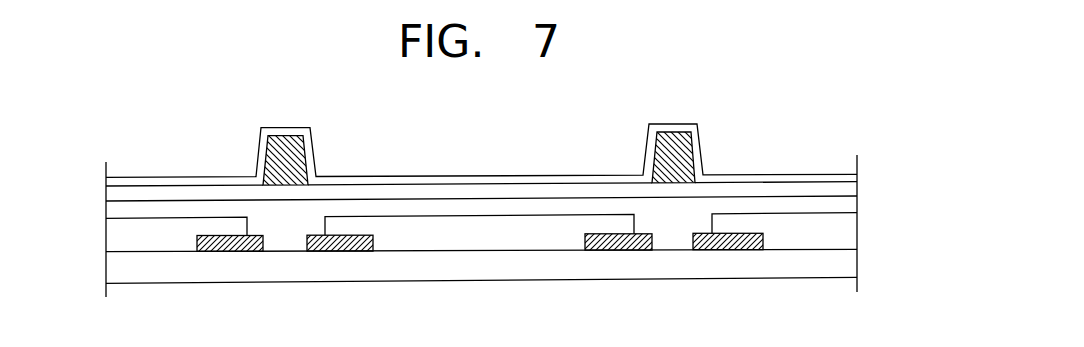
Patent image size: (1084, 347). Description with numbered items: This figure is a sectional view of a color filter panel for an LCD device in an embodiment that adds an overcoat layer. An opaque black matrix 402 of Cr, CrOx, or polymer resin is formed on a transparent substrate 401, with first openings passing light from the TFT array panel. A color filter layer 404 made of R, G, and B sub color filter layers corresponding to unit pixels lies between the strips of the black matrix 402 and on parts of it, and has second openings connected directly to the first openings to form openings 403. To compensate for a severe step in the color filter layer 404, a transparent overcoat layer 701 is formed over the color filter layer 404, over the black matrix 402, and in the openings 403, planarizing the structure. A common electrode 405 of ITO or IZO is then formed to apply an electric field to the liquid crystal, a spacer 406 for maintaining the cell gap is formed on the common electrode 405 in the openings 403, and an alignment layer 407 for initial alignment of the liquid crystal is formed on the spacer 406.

The transparent substrate 401 is at (847, 266).
The black matrix 402 is at (730, 242).
The openings 403 is at (673, 223).
The color filter layer 404 is at (848, 231).
The common electrode 405 is at (848, 189).
The spacer 406 is at (685, 143).
The alignment layer 407 is at (845, 175).
The overcoat layer 701 is at (847, 206).